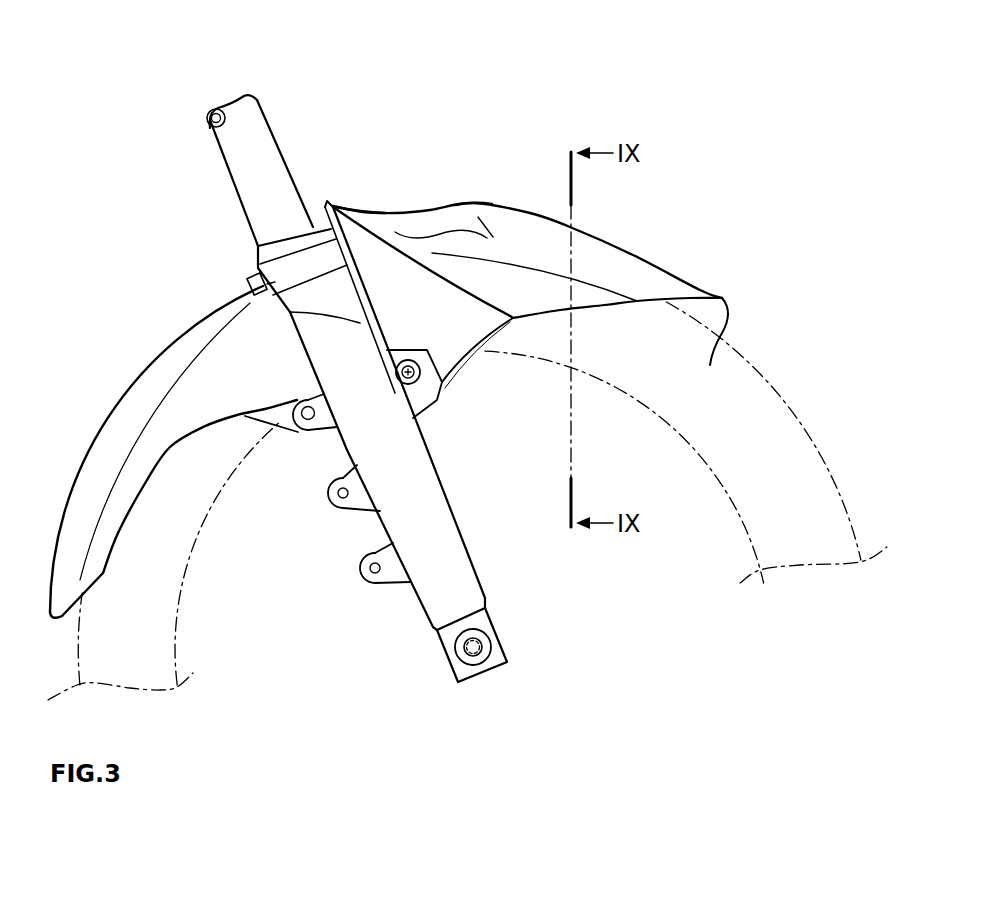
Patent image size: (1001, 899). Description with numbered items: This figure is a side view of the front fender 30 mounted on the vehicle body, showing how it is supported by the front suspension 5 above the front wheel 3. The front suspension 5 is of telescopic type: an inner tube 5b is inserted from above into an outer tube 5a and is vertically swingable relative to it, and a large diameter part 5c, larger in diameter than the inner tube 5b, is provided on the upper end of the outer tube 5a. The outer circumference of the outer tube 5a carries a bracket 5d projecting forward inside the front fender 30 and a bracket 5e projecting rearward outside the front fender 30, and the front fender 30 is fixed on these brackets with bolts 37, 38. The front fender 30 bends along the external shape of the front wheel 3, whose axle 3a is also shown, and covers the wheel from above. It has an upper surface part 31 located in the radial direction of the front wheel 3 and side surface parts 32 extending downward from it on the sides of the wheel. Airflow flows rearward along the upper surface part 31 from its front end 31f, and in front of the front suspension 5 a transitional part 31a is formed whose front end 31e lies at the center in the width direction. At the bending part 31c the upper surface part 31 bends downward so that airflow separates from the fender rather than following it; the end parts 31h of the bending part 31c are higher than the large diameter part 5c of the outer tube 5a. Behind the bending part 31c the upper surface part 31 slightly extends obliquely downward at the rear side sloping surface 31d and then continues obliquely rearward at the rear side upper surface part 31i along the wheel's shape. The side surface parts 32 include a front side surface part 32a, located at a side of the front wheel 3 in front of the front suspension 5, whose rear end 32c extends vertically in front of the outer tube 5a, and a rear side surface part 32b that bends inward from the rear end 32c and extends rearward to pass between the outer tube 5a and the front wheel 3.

The front fender 30 is at (567, 108).
The upper surface part 31 is at (519, 192).
The transitional part 31a is at (354, 189).
The bending part 31c is at (399, 211).
The rear side sloping surface 31d is at (442, 221).
The front end of transitional part 31e is at (478, 202).
The front end of upper surface part 31f is at (710, 365).
The end parts of bending part 31h is at (326, 202).
The rear side upper surface part 31i is at (118, 413).
The side surface parts 32 is at (466, 374).
The front side surface part 32a is at (472, 347).
The rear side surface part 32b is at (211, 415).
The rear end of front side surface part 32c is at (300, 341).
The bolt 37 is at (414, 383).
The bolt 38 is at (310, 430).
The front suspension 5 is at (290, 163).
The outer tube 5a is at (382, 528).
The inner tube 5b is at (232, 192).
The large diameter part 5c is at (248, 285).
The bracket 5d is at (404, 356).
The bracket 5e is at (300, 396).
The front wheel 3 is at (830, 472).
The axle 3a is at (454, 645).